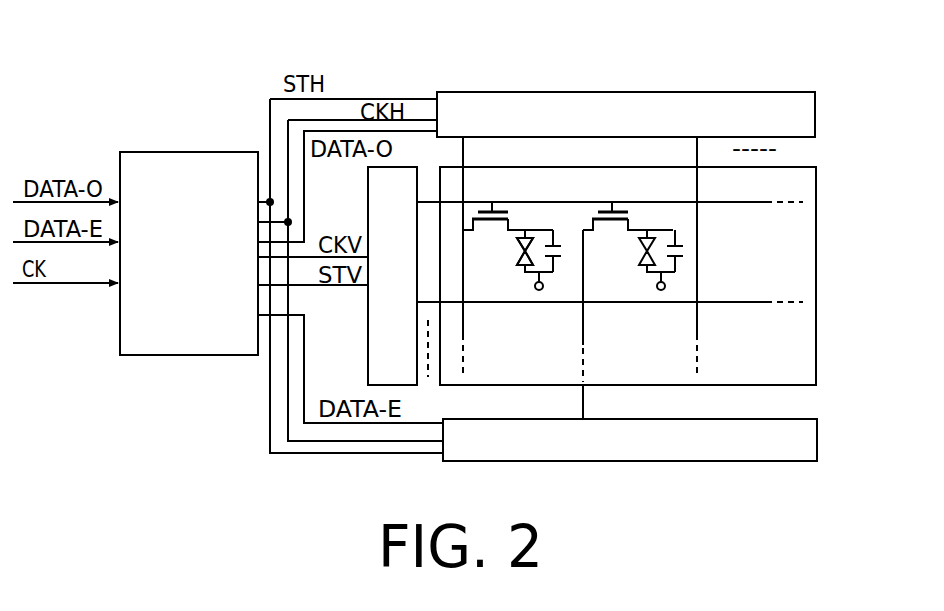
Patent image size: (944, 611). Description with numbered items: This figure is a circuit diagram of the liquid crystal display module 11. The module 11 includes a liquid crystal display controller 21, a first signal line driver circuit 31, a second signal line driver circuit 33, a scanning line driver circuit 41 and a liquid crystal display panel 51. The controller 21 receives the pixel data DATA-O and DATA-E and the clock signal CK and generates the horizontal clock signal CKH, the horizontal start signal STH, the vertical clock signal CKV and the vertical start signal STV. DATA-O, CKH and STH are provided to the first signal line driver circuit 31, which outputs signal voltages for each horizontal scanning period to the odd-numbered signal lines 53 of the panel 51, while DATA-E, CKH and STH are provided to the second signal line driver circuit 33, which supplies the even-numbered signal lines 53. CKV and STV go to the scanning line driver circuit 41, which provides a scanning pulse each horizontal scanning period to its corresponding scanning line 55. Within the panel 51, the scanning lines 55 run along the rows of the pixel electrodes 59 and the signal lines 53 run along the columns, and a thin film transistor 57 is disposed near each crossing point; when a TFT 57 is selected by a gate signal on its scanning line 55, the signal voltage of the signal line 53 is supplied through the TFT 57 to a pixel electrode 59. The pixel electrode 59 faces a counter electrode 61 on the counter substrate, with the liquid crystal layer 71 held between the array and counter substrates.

The liquid crystal display module 11 is at (633, 82).
The liquid crystal display controller 21 is at (183, 358).
The first signal line driver circuit 31 is at (722, 93).
The second signal line driver circuit 33 is at (695, 463).
The scanning line driver circuit 41 is at (368, 338).
The liquid crystal display panel 51 is at (833, 272).
The signal line 53 is at (464, 191).
The scanning line 55 is at (737, 203).
The thin film transistor 57 is at (508, 212).
The pixel electrode 59 is at (527, 235).
The counter electrode 61 is at (522, 262).
The liquid crystal layer 71 is at (512, 250).